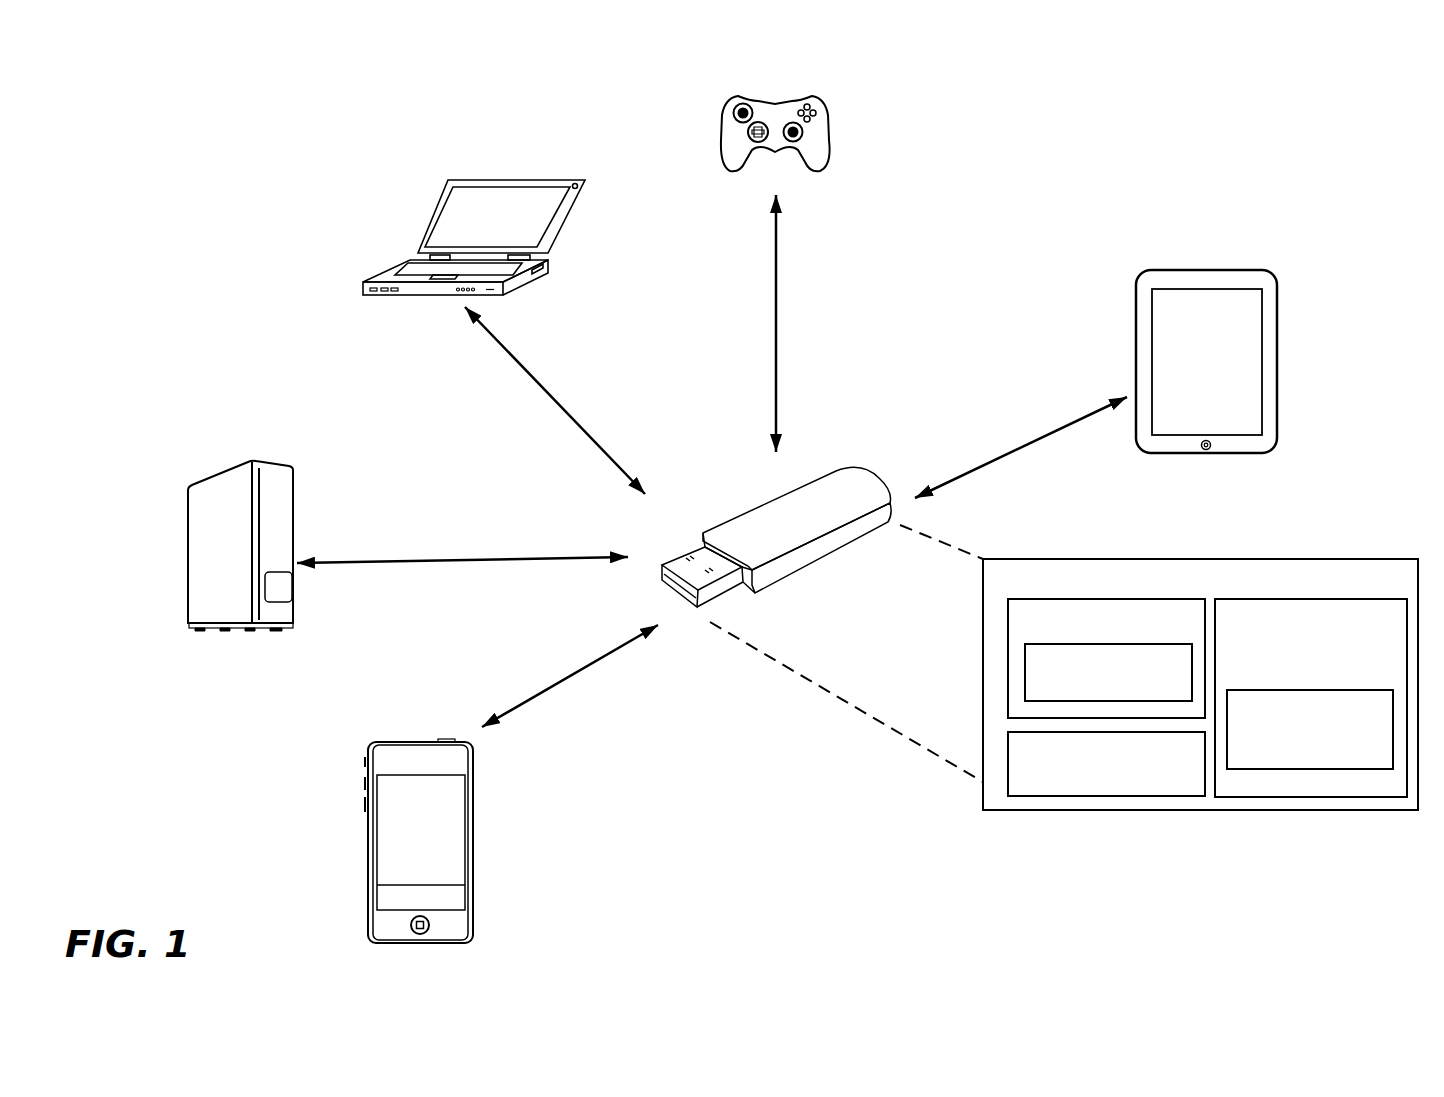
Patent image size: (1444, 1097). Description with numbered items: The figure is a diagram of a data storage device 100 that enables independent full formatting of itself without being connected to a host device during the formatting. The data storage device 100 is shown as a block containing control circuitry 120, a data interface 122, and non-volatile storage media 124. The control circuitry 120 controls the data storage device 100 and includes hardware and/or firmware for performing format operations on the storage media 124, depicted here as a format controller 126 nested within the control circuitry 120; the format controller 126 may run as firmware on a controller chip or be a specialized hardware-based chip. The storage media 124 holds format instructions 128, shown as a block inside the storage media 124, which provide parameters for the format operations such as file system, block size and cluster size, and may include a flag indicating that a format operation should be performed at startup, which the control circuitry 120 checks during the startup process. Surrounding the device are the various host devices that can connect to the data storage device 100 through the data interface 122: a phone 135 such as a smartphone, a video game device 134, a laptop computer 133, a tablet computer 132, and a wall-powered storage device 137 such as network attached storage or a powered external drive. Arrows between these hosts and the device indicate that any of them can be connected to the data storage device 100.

The data storage device 100 is at (1380, 558).
The control circuitry 120 is at (1007, 657).
The data interface 122 is at (1092, 786).
The storage media 124 is at (1297, 654).
The format controller 126 is at (1152, 696).
The format instructions 128 is at (1353, 764).
The tablet computer 132 is at (1207, 270).
The laptop computer 133 is at (518, 180).
The video game device 134 is at (775, 94).
The phone 135 is at (422, 742).
The wall-powered storage device 137 is at (244, 462).